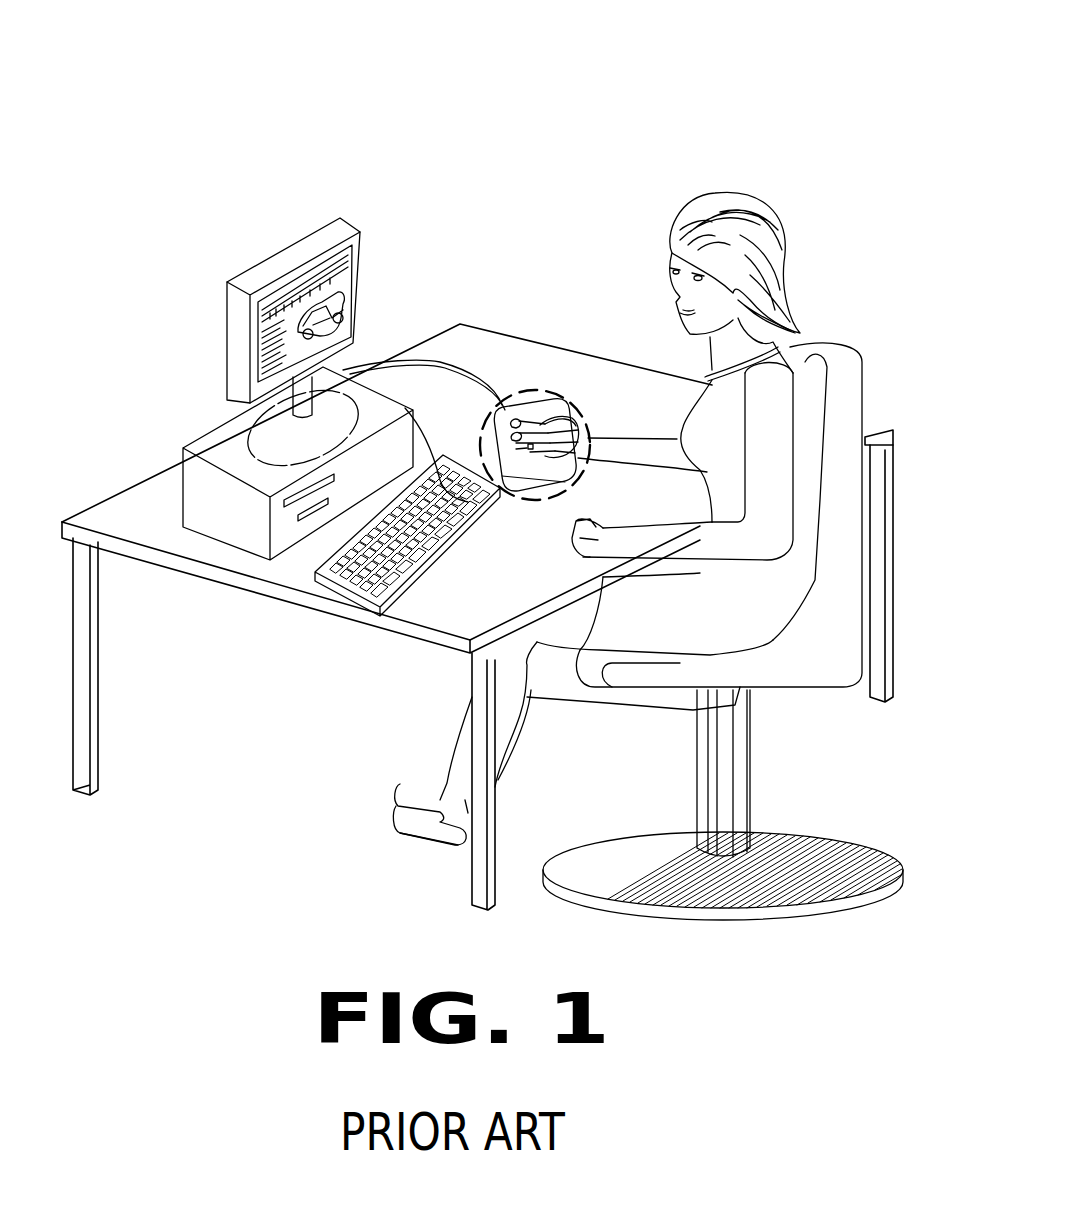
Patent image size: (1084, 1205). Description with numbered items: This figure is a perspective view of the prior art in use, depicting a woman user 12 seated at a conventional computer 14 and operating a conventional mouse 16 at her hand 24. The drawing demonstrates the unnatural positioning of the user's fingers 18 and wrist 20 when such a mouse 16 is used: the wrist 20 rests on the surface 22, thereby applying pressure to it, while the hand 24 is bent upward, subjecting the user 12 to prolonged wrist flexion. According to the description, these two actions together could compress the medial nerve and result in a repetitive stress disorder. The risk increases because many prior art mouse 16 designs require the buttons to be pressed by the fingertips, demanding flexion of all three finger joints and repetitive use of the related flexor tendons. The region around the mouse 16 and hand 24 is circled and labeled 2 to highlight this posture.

The input device 2 is at (538, 508).
The user 12 is at (735, 195).
The conventional computer 14 is at (208, 402).
The mouse 16 is at (512, 395).
The fingers 18 is at (518, 436).
The wrist 20 is at (582, 440).
The surface 22 is at (627, 518).
The hand 24 is at (572, 436).